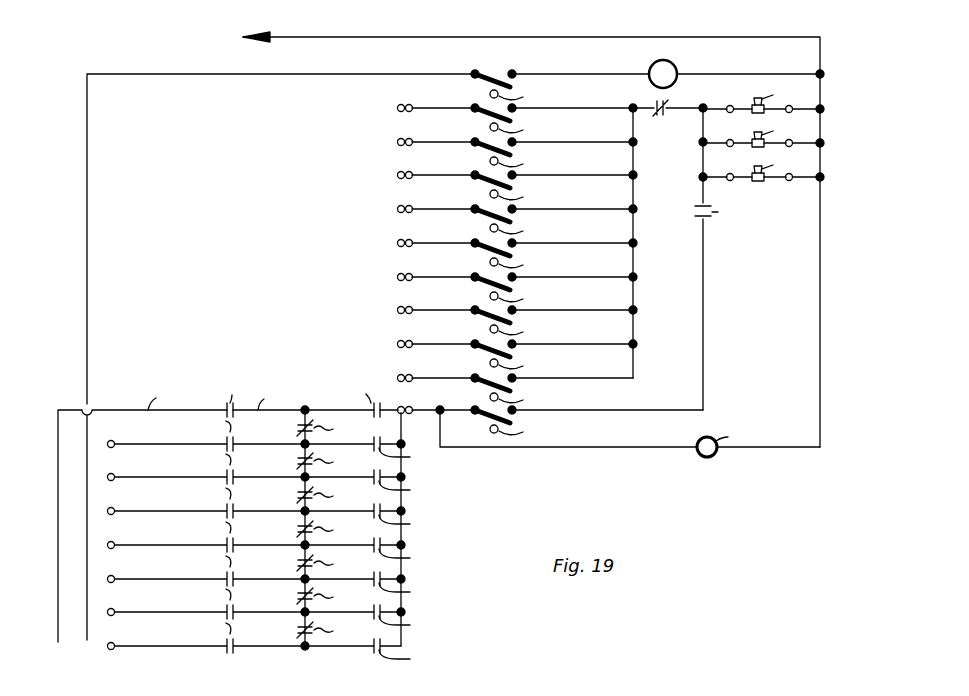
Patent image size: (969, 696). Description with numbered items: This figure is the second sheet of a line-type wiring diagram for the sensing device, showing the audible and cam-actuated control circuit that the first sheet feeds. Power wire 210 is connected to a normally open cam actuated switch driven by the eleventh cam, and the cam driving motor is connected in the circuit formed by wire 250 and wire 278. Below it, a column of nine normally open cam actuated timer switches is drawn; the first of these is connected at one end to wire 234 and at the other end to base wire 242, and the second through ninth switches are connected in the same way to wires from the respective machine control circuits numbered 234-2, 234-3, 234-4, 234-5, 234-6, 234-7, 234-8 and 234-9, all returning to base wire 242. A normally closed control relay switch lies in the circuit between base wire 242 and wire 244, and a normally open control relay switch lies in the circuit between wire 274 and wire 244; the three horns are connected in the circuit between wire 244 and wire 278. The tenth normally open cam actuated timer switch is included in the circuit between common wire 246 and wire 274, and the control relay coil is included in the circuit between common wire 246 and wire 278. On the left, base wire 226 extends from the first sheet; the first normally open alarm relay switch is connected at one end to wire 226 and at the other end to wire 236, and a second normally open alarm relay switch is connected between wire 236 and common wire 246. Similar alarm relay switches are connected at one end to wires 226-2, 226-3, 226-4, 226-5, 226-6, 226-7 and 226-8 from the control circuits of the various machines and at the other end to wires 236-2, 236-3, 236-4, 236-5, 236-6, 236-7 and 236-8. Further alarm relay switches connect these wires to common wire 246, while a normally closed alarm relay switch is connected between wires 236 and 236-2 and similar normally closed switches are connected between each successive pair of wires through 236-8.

The wire 278 is at (372, 38).
The power wire 210 is at (262, 76).
The wire 250 is at (562, 74).
The wire 234 is at (386, 104).
The wire 234-2 is at (386, 138).
The wire 234-3 is at (386, 171).
The wire 234-4 is at (386, 205).
The wire 234-5 is at (386, 239).
The wire 234-6 is at (386, 273).
The wire 234-7 is at (386, 306).
The wire 234-8 is at (386, 340).
The wire 234-9 is at (386, 374).
The wire 244 is at (680, 117).
The base wire 242 is at (636, 300).
The wire 274 is at (705, 268).
The common wire 246 is at (420, 410).
The base wire 226 is at (58, 642).
The wire 226-2 is at (129, 443).
The wire 226-3 is at (129, 476).
The wire 226-4 is at (129, 510).
The wire 226-5 is at (129, 544).
The wire 226-6 is at (129, 578).
The wire 226-7 is at (129, 611).
The wire 226-8 is at (129, 645).
The wire 236 is at (305, 530).
The wire 236-2 is at (243, 443).
The wire 236-3 is at (243, 476).
The wire 236-4 is at (243, 510).
The wire 236-5 is at (243, 544).
The wire 236-6 is at (243, 578).
The wire 236-7 is at (243, 611).
The wire 236-8 is at (243, 645).